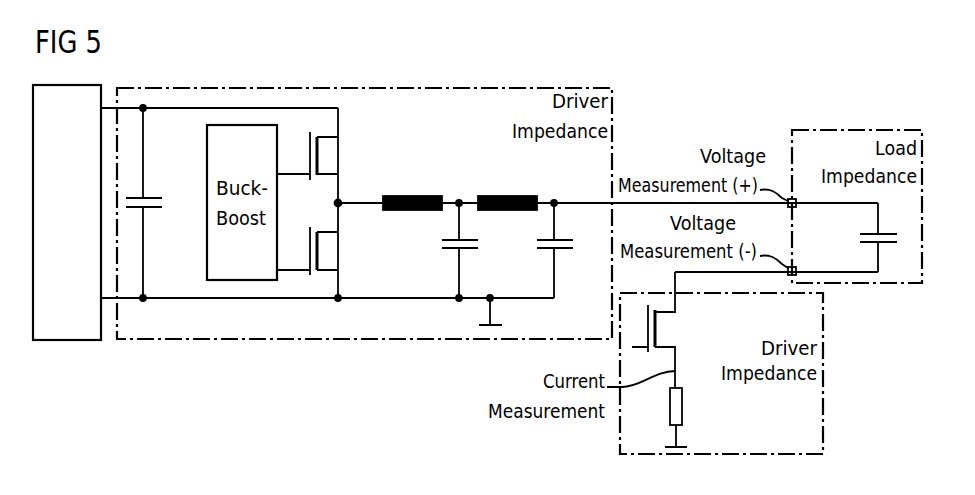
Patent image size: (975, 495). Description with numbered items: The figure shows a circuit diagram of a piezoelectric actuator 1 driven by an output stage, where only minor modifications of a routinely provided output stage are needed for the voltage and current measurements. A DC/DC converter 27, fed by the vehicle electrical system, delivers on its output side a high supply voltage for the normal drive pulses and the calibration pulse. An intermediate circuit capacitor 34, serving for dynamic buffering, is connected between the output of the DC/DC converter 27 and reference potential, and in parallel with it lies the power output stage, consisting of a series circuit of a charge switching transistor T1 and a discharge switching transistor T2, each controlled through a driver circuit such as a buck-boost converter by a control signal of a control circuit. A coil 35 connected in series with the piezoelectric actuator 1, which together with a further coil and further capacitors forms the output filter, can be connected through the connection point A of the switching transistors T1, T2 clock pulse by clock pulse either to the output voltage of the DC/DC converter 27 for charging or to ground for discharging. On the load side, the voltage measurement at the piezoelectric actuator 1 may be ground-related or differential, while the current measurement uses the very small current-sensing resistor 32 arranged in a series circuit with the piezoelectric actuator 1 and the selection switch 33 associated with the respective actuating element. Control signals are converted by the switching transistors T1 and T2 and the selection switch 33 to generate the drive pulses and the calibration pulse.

The DC/DC converter 27 is at (72, 342).
The intermediate circuit capacitor 34 is at (147, 195).
The coil 35 is at (417, 193).
The charge switching transistor T1 is at (322, 157).
The discharge switching transistor T2 is at (322, 252).
The connection point A is at (341, 207).
The piezoelectric actuator 1 is at (858, 238).
The selection switch 33 is at (657, 328).
The current-sensing resistor 32 is at (683, 410).